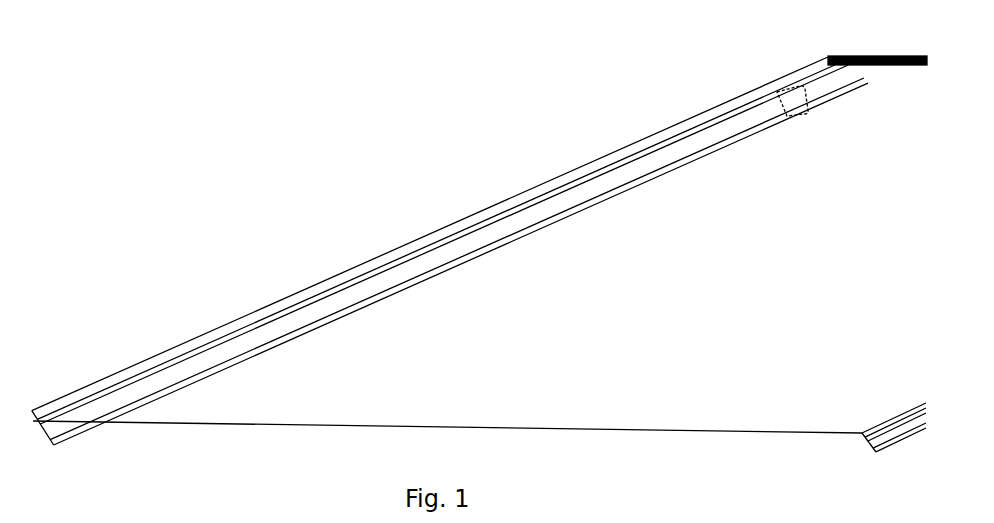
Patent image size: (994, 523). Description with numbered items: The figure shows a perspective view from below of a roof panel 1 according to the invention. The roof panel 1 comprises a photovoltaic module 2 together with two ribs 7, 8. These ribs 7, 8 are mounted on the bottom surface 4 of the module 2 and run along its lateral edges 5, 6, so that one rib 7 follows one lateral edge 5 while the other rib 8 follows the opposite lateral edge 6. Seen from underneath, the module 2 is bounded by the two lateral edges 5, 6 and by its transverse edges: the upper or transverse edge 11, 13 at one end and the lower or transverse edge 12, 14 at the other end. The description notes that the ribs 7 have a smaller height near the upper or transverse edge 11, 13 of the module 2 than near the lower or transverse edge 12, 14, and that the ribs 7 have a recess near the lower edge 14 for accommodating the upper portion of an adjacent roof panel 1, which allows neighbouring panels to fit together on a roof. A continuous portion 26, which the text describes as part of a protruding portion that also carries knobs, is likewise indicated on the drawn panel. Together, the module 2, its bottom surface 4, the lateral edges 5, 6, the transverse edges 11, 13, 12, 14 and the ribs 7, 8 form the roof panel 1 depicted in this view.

The roof panel 1 is at (479, 260).
The photovoltaic module 2 is at (447, 385).
The bottom surface 4 is at (658, 377).
The lateral edge 5 is at (235, 328).
The lateral edge 6 is at (910, 435).
The rib 7 is at (342, 297).
The rib 8 is at (897, 431).
The upper transverse edge 11 is at (108, 456).
The upper transverse edge 13 is at (43, 428).
The lower transverse edge 12 is at (864, 42).
The lower transverse edge 14 is at (888, 55).
The continuous portion 26 is at (803, 100).